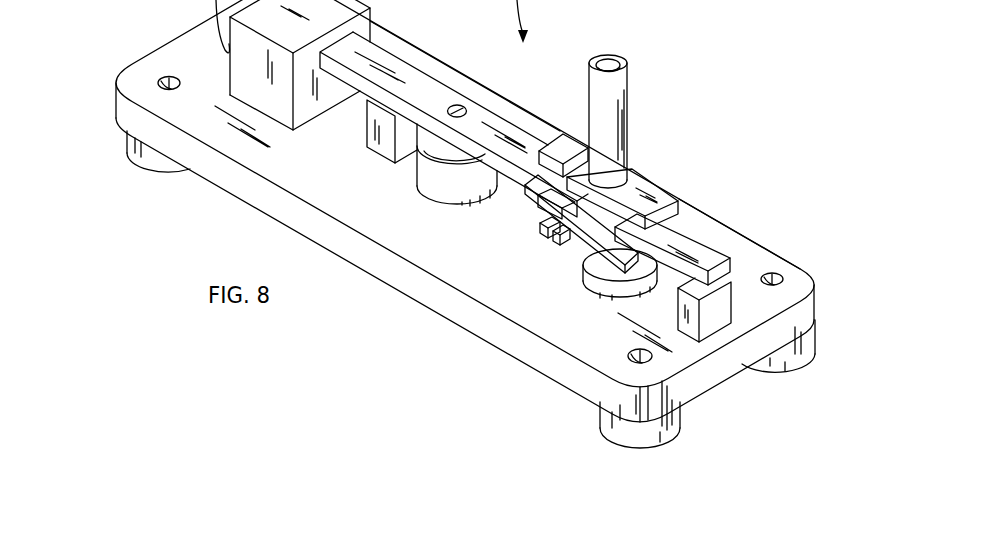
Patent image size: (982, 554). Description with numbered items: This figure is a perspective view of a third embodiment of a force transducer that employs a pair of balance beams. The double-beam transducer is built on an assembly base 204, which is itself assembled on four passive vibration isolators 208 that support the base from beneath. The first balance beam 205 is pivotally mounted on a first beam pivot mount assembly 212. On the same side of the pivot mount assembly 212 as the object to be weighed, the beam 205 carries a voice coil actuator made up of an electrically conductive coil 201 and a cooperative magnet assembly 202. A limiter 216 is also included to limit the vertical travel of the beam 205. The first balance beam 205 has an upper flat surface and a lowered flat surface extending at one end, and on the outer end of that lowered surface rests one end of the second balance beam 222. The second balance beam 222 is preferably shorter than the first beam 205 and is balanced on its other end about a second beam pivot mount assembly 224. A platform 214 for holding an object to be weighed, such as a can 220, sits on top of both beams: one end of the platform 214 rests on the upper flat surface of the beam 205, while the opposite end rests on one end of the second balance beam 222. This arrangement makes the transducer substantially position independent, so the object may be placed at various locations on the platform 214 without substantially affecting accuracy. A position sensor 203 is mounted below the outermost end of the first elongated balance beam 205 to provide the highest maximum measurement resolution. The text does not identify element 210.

The electrically conductive coil 201 is at (467, 190).
The magnet assembly 202 is at (425, 155).
The position sensor 203 is at (602, 285).
The assembly base 204 is at (262, 198).
The first balance beam 205 is at (410, 72).
The passive vibration isolators 208 is at (137, 153).
The lever arm 210 is at (585, 258).
The first beam pivot mount assembly 212 is at (367, 140).
The platform 214 is at (650, 188).
The limiter 216 is at (540, 225).
The can 220 is at (617, 103).
The second balance beam 222 is at (692, 232).
The second beam pivot mount assembly 224 is at (730, 290).